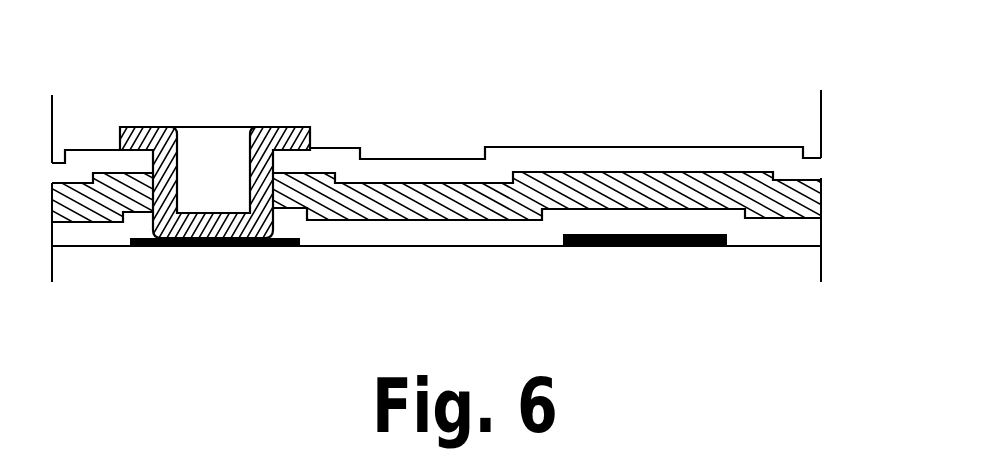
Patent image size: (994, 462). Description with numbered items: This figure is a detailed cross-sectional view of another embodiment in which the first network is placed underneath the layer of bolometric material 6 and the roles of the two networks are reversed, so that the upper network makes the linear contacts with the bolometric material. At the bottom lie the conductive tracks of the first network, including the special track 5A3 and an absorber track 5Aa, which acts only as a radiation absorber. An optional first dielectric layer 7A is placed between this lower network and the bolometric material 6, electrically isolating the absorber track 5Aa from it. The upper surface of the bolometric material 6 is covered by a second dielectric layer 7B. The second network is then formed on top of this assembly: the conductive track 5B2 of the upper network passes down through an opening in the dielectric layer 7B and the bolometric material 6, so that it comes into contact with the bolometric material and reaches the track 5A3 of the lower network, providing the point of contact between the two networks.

The conductive track of the second network 5B2 is at (285, 127).
The second dielectric layer 7B is at (746, 162).
The bolometric material 6 is at (790, 190).
The conductive track of the first network 5A3 is at (232, 247).
The absorber conductive track 5Aa is at (635, 247).
The first dielectric layer 7A is at (767, 230).